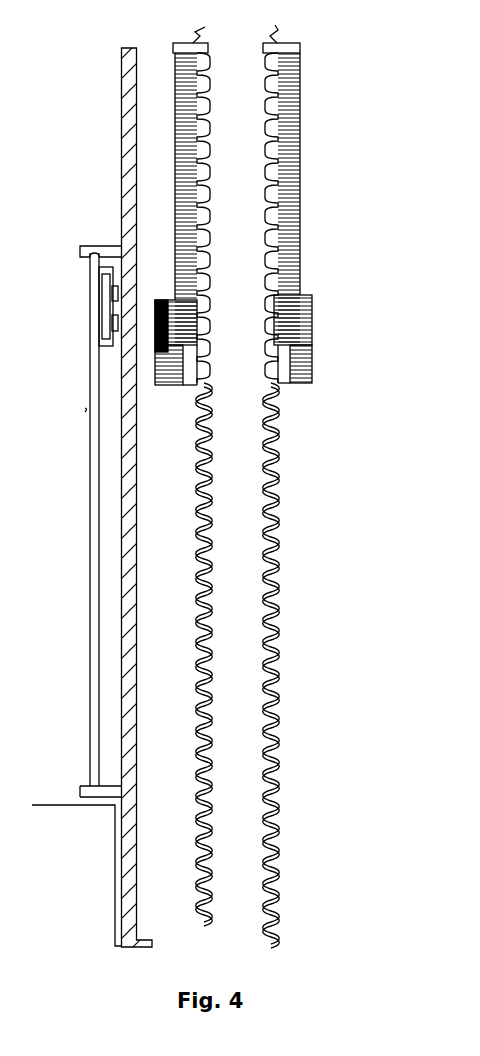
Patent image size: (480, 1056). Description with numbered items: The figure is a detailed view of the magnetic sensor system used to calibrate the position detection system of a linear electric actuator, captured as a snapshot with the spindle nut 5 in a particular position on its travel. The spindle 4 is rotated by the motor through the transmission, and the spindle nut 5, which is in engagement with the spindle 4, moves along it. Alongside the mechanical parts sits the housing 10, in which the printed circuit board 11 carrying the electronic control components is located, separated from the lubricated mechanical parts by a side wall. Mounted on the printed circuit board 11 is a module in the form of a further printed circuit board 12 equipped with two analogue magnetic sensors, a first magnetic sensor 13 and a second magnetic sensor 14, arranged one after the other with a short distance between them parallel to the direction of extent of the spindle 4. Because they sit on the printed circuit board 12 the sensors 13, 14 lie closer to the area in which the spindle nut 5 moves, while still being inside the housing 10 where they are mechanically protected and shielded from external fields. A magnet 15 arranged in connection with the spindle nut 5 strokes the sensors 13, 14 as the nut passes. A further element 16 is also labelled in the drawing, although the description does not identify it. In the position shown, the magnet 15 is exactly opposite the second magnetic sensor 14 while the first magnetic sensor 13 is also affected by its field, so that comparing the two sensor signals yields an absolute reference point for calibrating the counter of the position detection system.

The spindle 4 is at (275, 668).
The spindle nut 5 is at (312, 325).
The housing 10 is at (122, 151).
The printed circuit board 11 is at (97, 453).
The printed circuit board 12 is at (106, 282).
The first magnetic sensor 13 is at (116, 297).
The second magnetic sensor 14 is at (114, 325).
The magnet 15 is at (157, 340).
The base 16 is at (61, 875).